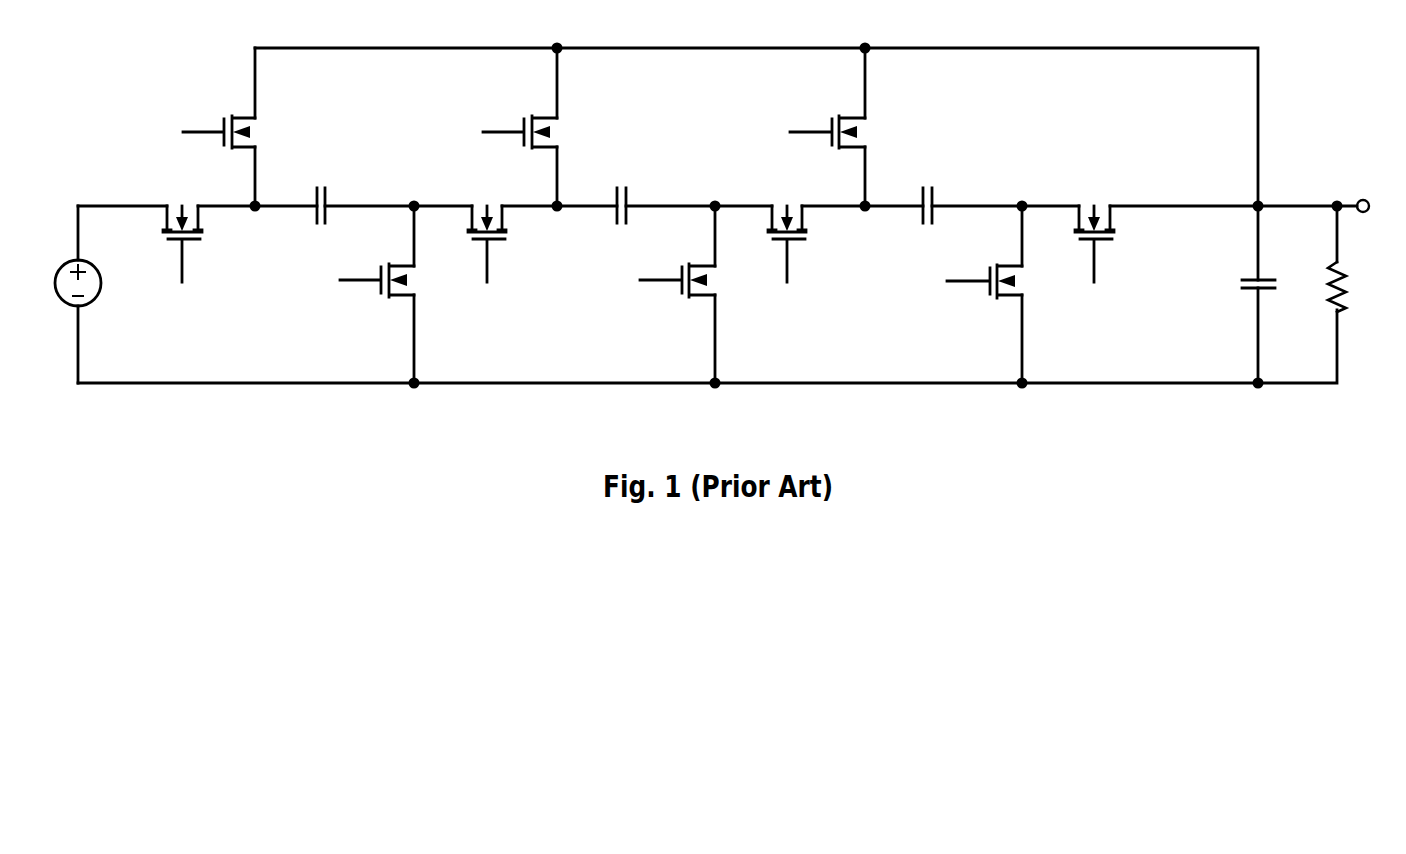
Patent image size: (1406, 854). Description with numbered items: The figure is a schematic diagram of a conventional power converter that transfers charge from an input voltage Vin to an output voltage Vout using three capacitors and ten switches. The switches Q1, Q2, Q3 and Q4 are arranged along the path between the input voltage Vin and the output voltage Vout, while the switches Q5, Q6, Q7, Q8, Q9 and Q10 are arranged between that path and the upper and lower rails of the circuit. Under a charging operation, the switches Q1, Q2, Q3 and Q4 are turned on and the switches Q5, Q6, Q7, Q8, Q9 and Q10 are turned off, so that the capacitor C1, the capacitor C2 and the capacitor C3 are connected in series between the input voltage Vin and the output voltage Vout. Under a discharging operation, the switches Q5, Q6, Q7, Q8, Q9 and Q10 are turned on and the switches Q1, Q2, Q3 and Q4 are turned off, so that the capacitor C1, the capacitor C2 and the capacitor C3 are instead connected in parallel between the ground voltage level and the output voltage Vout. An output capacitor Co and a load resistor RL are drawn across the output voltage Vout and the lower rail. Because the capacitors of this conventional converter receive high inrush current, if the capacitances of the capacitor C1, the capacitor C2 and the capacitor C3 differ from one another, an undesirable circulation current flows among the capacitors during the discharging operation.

The input voltage Vin is at (59, 294).
The output voltage Vout is at (1359, 194).
The switch Q1 is at (176, 244).
The switch Q2 is at (476, 244).
The switch Q3 is at (778, 244).
The switch Q4 is at (1086, 244).
The switch Q5 is at (219, 123).
The switch Q6 is at (520, 123).
The switch Q7 is at (827, 123).
The switch Q8 is at (374, 290).
The switch Q9 is at (677, 290).
The switch Q10 is at (982, 289).
The capacitor C1 is at (319, 196).
The capacitor C2 is at (623, 196).
The capacitor C3 is at (929, 196).
The output capacitor Co is at (1240, 284).
The load resistor RL is at (1360, 287).